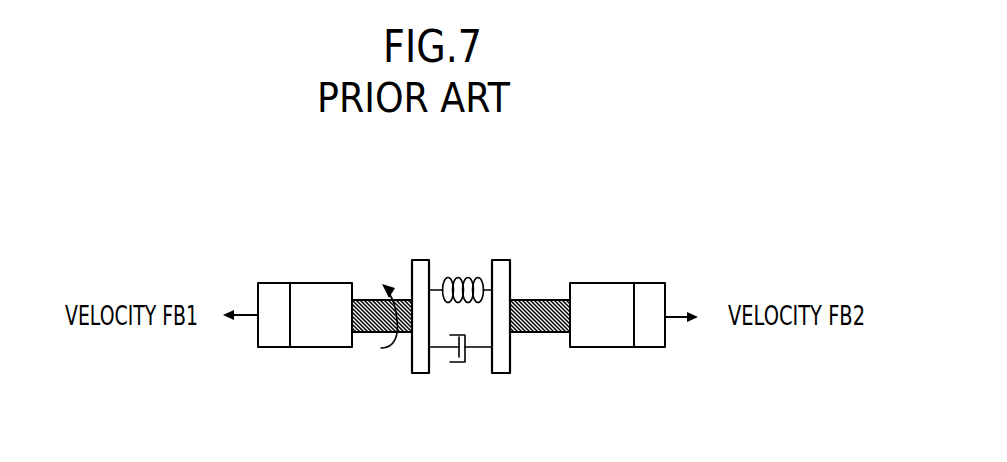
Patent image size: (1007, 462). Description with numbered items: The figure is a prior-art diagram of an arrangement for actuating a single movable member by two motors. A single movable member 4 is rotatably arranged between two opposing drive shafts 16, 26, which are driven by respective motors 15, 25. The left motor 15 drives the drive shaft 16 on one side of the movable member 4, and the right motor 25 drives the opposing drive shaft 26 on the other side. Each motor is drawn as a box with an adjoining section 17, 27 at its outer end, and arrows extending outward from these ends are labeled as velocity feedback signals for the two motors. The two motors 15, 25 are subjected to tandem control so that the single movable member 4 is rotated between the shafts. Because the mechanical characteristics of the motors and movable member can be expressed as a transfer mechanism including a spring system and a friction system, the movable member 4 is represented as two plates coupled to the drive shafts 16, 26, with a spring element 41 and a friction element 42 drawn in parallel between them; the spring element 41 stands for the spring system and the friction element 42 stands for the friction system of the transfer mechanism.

The movable member 4 is at (433, 290).
The motor 15 is at (316, 283).
The drive shaft 16 is at (363, 332).
The first velocity detector 17 is at (270, 283).
The motor 25 is at (600, 283).
The drive shaft 26 is at (537, 332).
The second velocity detector 27 is at (647, 283).
The spring element 41 is at (464, 266).
The friction element 42 is at (460, 373).